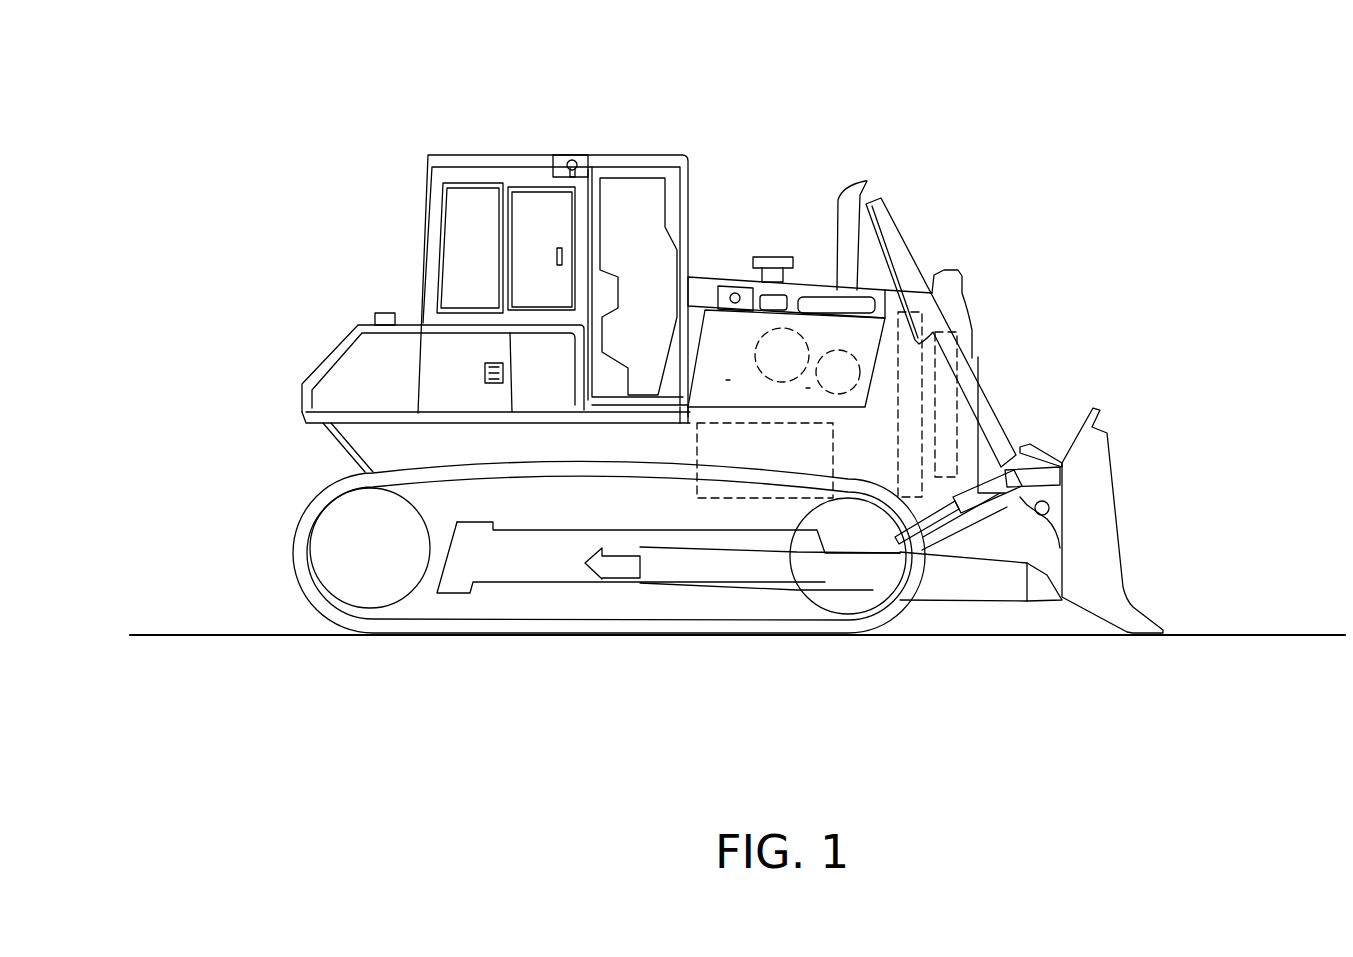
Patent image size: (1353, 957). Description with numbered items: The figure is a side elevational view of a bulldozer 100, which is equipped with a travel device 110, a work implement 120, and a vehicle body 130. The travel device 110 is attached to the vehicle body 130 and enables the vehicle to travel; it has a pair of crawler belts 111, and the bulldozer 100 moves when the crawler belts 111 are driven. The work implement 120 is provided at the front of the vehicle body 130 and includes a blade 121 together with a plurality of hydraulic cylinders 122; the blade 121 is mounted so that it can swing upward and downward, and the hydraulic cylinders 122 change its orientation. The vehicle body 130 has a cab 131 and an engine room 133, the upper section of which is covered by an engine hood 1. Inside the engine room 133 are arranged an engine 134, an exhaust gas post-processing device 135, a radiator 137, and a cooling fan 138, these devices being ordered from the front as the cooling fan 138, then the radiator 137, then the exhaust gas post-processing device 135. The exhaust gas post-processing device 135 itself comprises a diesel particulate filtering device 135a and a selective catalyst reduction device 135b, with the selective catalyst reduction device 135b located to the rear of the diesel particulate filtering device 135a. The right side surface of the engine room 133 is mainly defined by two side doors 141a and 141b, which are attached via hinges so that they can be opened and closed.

The bulldozer 100 is at (1072, 138).
The engine hood 1 is at (718, 272).
The travel device 110 is at (305, 488).
The crawler belts 111 is at (303, 558).
The work implement 120 is at (1117, 403).
The blade 121 is at (1117, 513).
The hydraulic cylinders 122 is at (1015, 467).
The vehicle body 130 is at (925, 237).
The cab 131 is at (628, 152).
The engine room 133 is at (862, 447).
The engine 134 is at (745, 500).
The exhaust gas post-processing device 135 is at (870, 148).
The diesel particulate filtering device 135a is at (838, 350).
The selective catalyst reduction device 135b is at (782, 328).
The radiator 137 is at (955, 330).
The cooling fan 138 is at (958, 423).
The side door 141a is at (728, 380).
The side door 141b is at (808, 388).